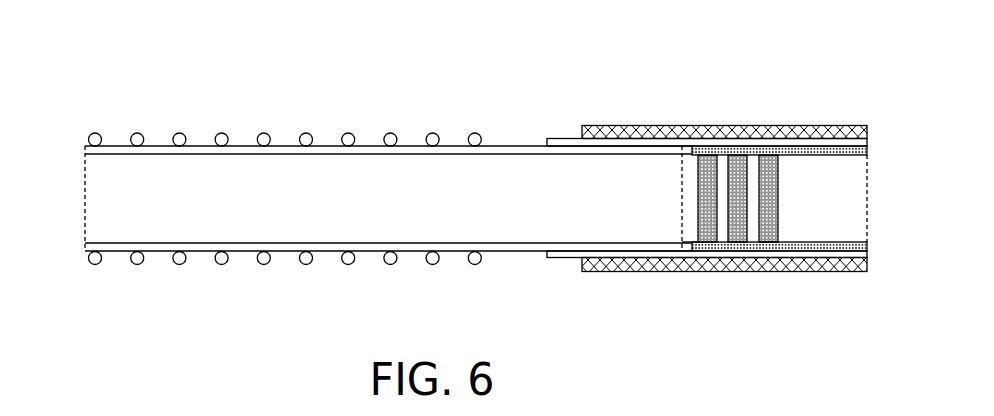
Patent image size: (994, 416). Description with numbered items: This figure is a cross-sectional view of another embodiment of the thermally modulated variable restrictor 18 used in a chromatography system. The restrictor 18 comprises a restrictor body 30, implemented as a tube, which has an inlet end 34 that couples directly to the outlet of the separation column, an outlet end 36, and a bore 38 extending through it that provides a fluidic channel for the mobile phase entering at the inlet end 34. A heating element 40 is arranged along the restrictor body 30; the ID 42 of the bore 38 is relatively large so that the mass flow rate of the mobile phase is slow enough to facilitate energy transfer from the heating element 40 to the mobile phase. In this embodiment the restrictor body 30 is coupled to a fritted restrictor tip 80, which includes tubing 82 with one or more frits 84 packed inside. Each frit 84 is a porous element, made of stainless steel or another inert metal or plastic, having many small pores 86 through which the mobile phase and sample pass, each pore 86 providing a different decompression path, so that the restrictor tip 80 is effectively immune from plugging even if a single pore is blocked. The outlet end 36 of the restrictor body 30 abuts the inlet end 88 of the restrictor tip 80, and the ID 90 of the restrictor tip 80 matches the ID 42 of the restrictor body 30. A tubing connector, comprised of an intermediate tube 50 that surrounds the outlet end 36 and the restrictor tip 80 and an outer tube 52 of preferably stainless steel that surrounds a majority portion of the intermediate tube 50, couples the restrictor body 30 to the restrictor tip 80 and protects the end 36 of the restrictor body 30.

The thermally modulated variable restrictor 18 is at (66, 73).
The restrictor body 30 is at (118, 250).
The inlet end 34 is at (85, 205).
The outlet end 36 is at (680, 204).
The bore 38 is at (258, 226).
The heating element 40 is at (136, 136).
The ID of the bore 42 is at (405, 155).
The intermediate tube 50 is at (562, 138).
The outer tube 52 is at (842, 126).
The fritted restrictor tip 80 is at (870, 172).
The tubing 82 is at (856, 242).
The frit 84 is at (770, 153).
The pore 86 is at (767, 243).
The inlet end of the restrictor tip 88 is at (682, 230).
The ID of the restrictor tip 90 is at (826, 156).